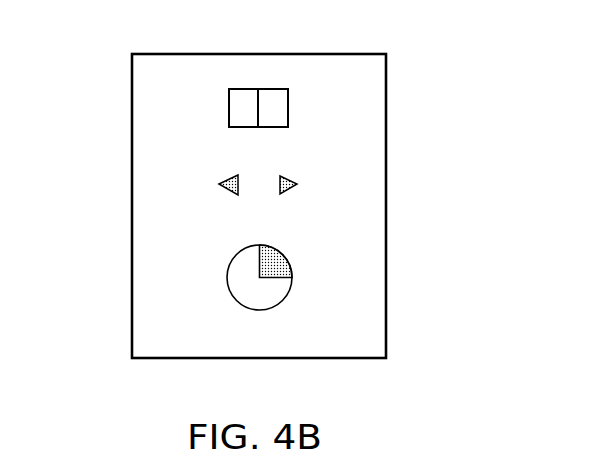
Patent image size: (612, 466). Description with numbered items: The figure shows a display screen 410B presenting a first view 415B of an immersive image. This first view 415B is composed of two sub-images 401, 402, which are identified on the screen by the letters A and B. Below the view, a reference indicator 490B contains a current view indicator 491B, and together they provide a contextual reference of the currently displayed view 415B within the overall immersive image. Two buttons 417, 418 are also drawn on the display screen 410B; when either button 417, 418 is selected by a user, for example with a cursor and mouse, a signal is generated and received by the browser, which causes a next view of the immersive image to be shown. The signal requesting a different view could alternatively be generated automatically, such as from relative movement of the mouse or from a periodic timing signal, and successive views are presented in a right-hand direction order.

The display screen 410B is at (403, 89).
The first view 415B is at (290, 117).
The sub-image 401 is at (245, 89).
The sub-image 402 is at (273, 89).
The button 417 is at (227, 189).
The button 418 is at (290, 188).
The reference indicator 490B is at (225, 278).
The current view indicator 491B is at (293, 262).